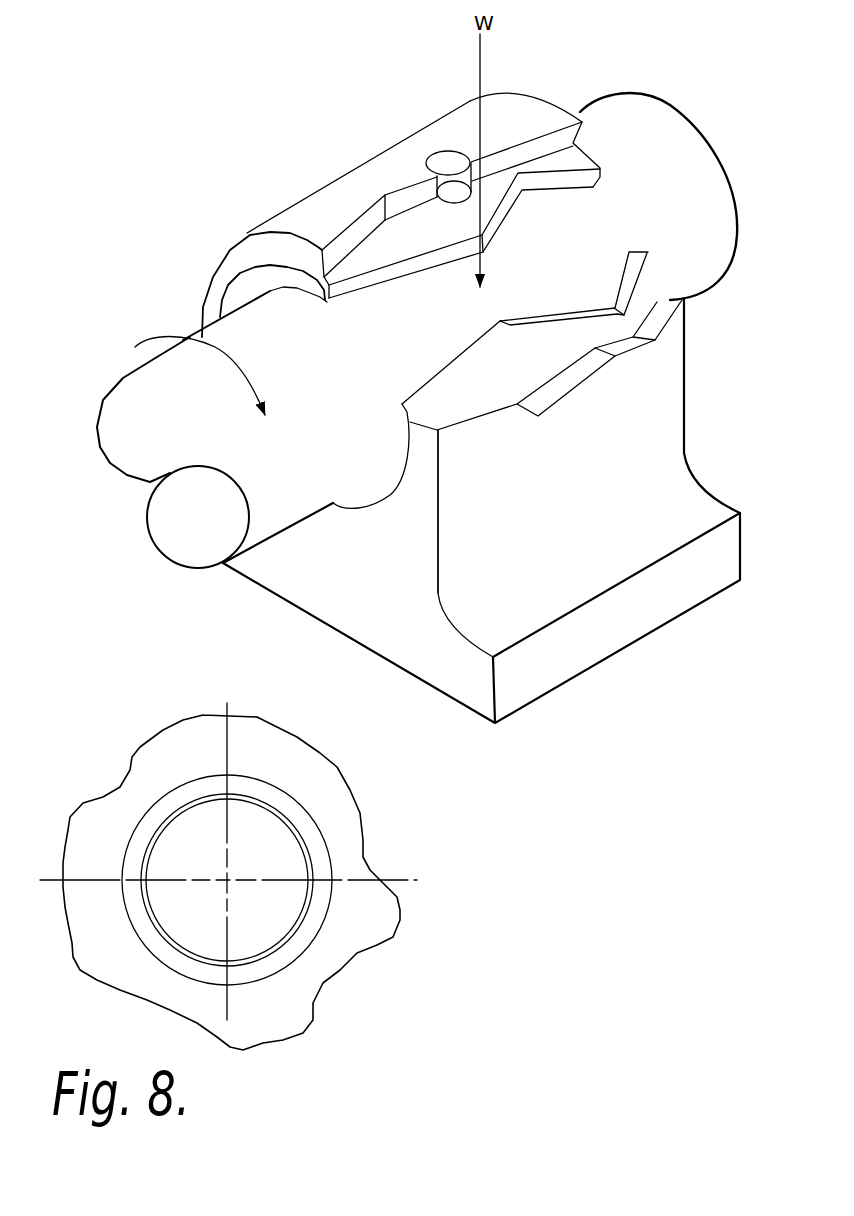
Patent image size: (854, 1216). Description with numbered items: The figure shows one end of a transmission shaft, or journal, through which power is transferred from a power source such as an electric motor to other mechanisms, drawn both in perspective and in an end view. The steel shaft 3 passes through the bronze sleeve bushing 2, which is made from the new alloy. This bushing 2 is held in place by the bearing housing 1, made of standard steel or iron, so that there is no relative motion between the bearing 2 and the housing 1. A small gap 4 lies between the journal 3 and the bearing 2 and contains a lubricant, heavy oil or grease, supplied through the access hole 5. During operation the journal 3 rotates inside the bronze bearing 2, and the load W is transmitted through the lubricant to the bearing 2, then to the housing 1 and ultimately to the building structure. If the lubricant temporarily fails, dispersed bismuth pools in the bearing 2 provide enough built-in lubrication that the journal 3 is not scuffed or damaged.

The bearing housing 1 is at (630, 417).
The bronze sleeve bushing 2 is at (258, 288).
The steel shaft 3 is at (297, 468).
The small gap 4 is at (299, 921).
The access hole 5 is at (449, 167).